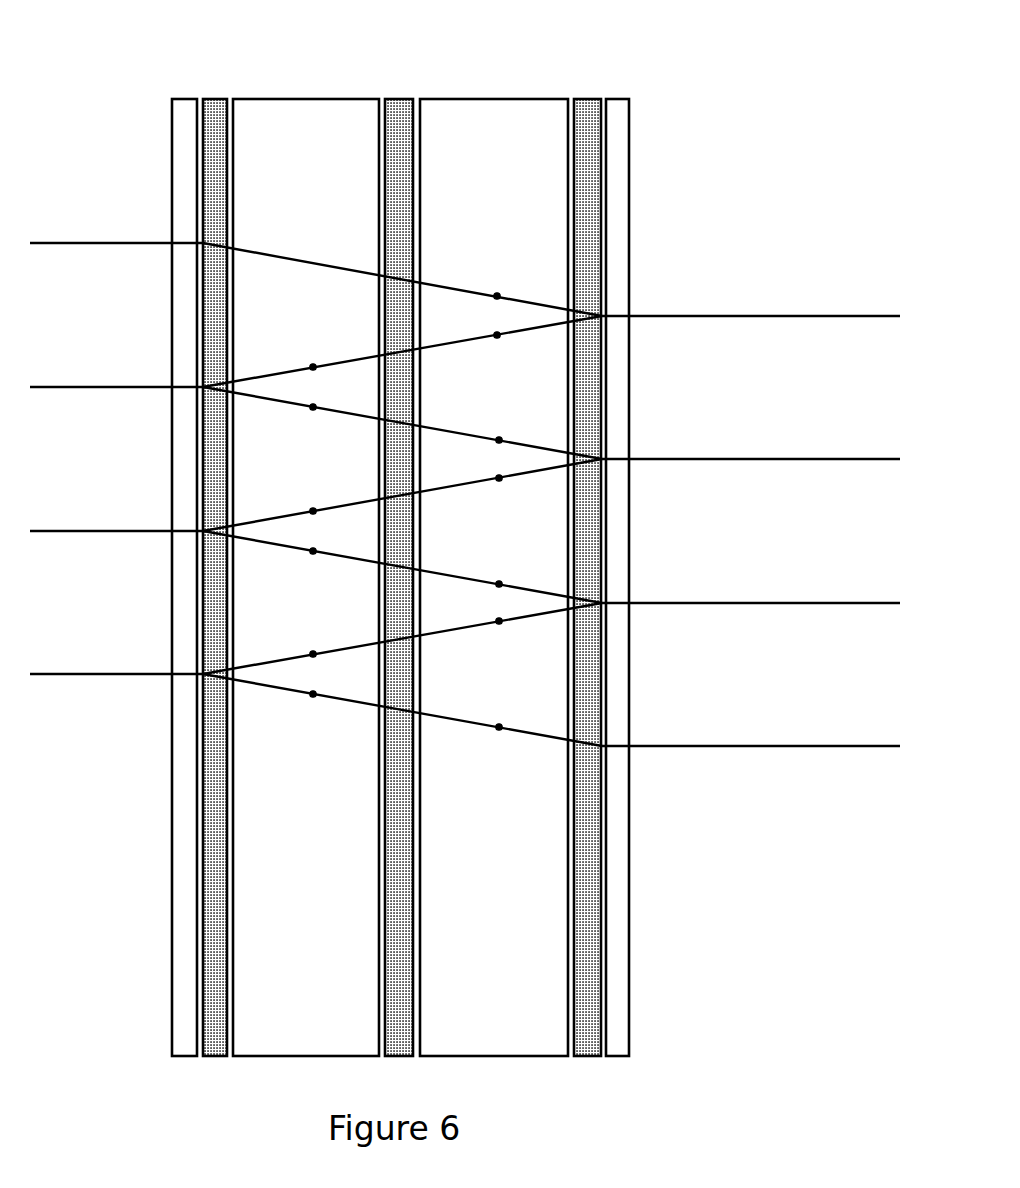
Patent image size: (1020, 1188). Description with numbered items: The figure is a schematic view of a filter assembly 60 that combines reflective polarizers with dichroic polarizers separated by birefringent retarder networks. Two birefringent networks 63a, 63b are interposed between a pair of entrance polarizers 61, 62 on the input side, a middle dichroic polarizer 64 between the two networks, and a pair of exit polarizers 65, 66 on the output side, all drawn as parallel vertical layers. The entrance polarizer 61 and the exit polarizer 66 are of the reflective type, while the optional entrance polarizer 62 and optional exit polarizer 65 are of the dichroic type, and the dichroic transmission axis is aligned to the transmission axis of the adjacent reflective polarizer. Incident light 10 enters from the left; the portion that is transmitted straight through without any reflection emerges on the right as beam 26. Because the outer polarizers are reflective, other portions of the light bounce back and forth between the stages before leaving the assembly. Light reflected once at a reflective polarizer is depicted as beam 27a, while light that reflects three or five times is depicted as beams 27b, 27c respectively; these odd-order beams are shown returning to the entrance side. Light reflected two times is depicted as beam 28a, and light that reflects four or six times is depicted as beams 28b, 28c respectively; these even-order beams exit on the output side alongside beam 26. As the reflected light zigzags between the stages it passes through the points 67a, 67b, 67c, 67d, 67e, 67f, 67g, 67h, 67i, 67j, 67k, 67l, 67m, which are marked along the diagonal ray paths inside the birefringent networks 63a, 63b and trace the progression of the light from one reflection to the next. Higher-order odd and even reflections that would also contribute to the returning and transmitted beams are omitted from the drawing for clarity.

The incident light 10 is at (316, 261).
The beam 26 is at (751, 298).
The beam 27a is at (316, 387).
The beam 27b is at (316, 531).
The beam 27c is at (316, 674).
The beam 28a is at (751, 440).
The beam 28b is at (751, 584).
The beam 28c is at (751, 727).
The assembly 60 is at (674, 882).
The entrance polarizer 61 is at (178, 557).
The entrance polarizer 62 is at (218, 557).
The birefringent network 63a is at (306, 557).
The birefringent network 63b is at (494, 557).
The middle dichroic polarizer 64 is at (402, 557).
The exit polarizer 65 is at (583, 557).
The exit polarizer 66 is at (624, 557).
The point 67a is at (530, 286).
The point 67b is at (530, 348).
The point 67c is at (279, 358).
The point 67d is at (279, 421).
The point 67e is at (531, 432).
The point 67f is at (530, 490).
The point 67g is at (280, 498).
The point 67h is at (280, 565).
The point 67i is at (530, 573).
The point 67j is at (530, 631).
The point 67k is at (280, 643).
The reflection point 67l is at (280, 709).
The reflection point 67m is at (533, 715).